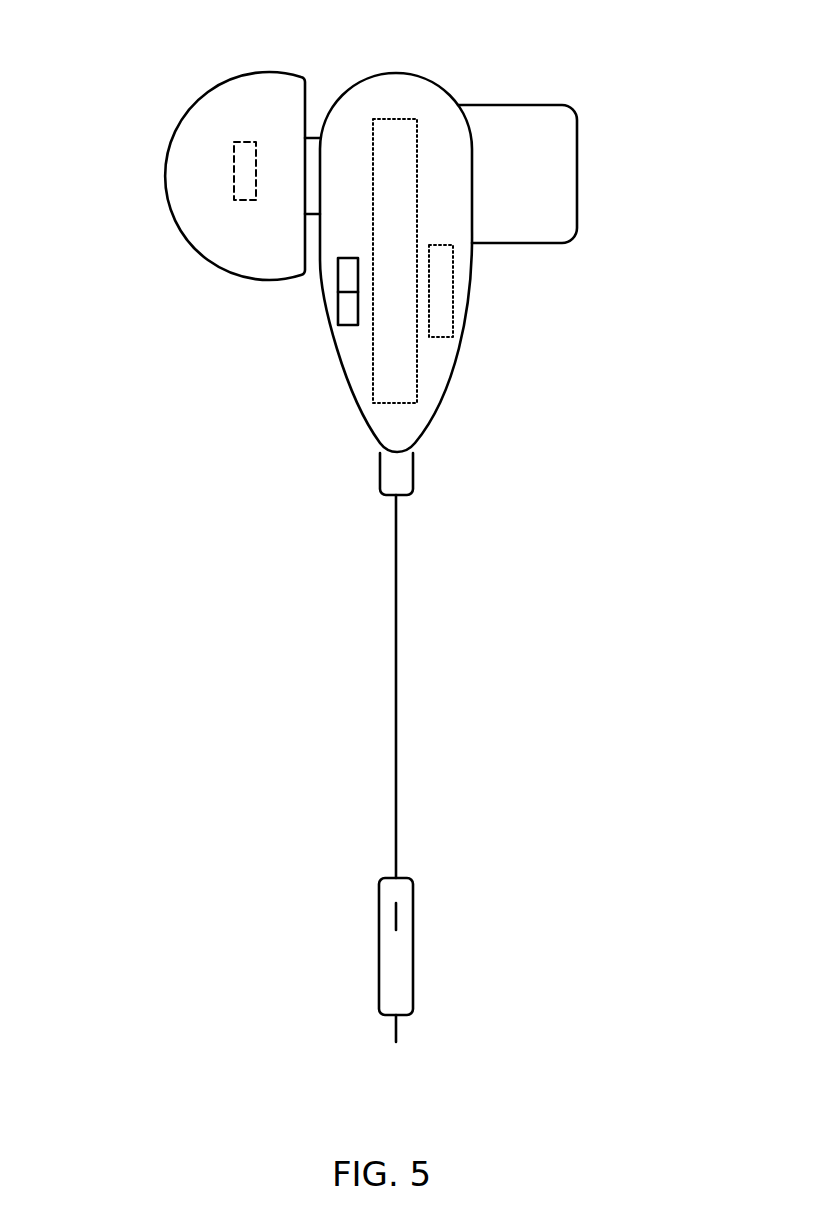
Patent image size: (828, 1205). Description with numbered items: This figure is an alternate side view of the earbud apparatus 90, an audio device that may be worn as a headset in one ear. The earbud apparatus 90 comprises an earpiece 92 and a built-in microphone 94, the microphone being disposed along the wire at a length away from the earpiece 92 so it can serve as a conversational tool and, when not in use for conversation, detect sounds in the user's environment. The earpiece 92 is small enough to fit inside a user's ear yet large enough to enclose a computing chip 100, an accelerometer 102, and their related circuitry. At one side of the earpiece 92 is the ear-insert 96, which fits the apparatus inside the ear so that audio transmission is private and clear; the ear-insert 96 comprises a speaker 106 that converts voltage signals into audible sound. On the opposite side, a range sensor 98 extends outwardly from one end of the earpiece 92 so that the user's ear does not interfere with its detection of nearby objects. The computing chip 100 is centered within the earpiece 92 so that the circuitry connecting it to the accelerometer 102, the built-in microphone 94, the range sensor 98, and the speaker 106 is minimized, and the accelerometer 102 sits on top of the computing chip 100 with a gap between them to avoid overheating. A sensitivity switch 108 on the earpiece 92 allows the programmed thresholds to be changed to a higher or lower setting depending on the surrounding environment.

The earbud apparatus 90 is at (141, 170).
The earpiece 92 is at (350, 352).
The built-in microphone 94 is at (390, 898).
The ear-insert 96 is at (272, 87).
The range sensor 98 is at (520, 160).
The computing chip 100 is at (405, 355).
The accelerometer 102 is at (446, 273).
The speaker 106 is at (249, 196).
The sensitivity switch 108 is at (352, 278).